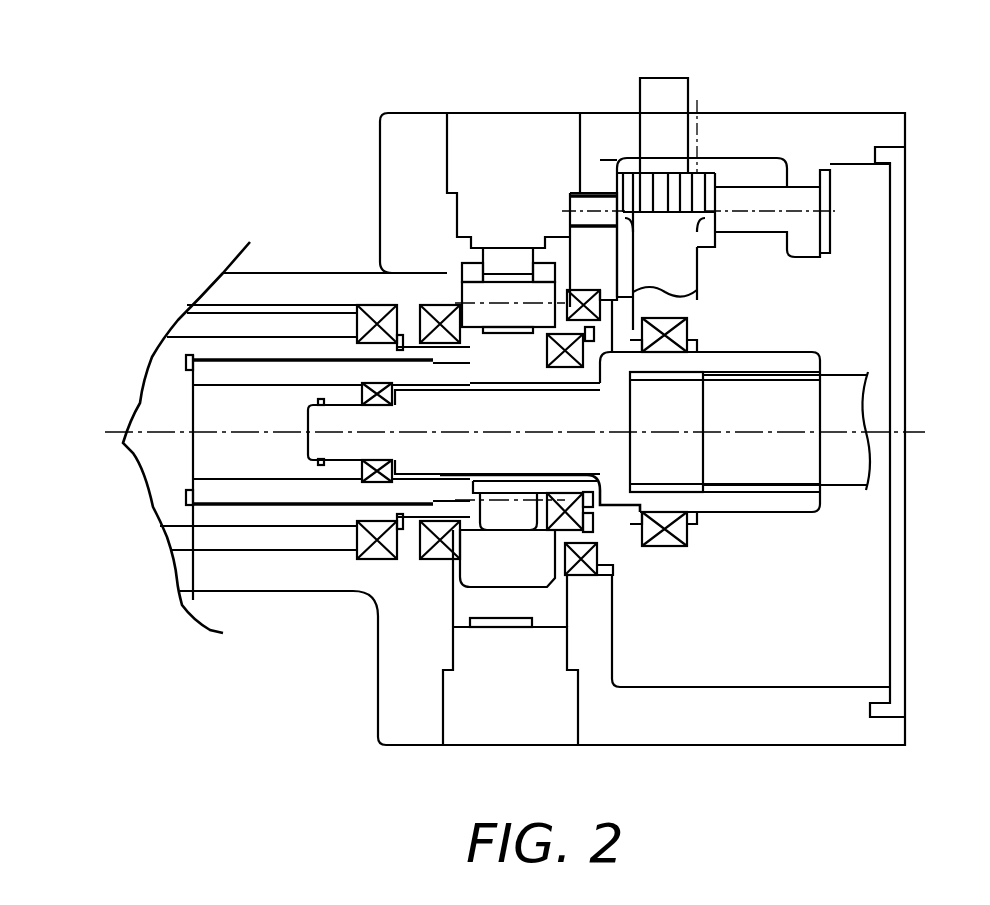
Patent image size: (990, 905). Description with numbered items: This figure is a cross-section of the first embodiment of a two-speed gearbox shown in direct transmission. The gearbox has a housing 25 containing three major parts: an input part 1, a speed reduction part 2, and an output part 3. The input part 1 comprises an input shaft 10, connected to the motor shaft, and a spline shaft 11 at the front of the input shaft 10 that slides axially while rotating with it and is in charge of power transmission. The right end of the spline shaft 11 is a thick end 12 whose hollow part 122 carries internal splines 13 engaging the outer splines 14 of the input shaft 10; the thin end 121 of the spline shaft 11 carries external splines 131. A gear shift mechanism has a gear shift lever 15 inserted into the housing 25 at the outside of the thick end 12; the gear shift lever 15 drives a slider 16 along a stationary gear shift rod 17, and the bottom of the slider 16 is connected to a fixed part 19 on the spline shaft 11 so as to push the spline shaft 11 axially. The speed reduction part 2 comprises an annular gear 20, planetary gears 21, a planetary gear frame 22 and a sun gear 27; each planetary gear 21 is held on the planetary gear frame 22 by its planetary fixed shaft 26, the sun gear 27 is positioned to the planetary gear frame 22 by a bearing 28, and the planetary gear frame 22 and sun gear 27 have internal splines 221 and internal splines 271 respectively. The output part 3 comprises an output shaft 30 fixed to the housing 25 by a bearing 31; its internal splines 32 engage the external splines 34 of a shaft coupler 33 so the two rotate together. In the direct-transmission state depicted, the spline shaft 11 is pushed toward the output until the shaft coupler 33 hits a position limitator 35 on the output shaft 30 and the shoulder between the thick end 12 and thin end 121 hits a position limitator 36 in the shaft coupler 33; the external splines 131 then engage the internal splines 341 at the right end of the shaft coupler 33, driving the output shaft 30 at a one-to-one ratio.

The input part 1 is at (852, 338).
The speed reduction part 2 is at (528, 86).
The output part 3 is at (135, 338).
The input shaft 10 is at (848, 412).
The spline shaft 11 is at (612, 495).
The thick end 12 is at (807, 505).
The internal splines 13 is at (700, 493).
The outer splines 14 is at (793, 373).
The gear shift lever 15 is at (668, 95).
The slider 16 is at (702, 238).
The gear shift rod 17 is at (752, 190).
The fixed part 19 is at (695, 345).
The annular gear 20 is at (490, 625).
The planetary gears 21 is at (493, 257).
The planetary gear frame 22 is at (435, 330).
The housing 25 is at (415, 122).
The planetary fixed shaft 26 is at (522, 283).
The sun gear 27 is at (597, 537).
The bearing 28 is at (548, 627).
The output shaft 30 is at (190, 345).
The bearing 31 is at (373, 313).
The internal splines 32 is at (263, 367).
The shaft coupler 33 is at (190, 357).
The external splines 34 is at (365, 481).
The position limitator 35 is at (188, 498).
The position limitator 36 is at (390, 485).
The thin end 121 is at (320, 418).
The hollow part 122 is at (675, 478).
The external splines 131 is at (413, 467).
The internal splines 221 is at (445, 555).
The internal splines 271 is at (543, 473).
The internal splines 341 is at (393, 347).